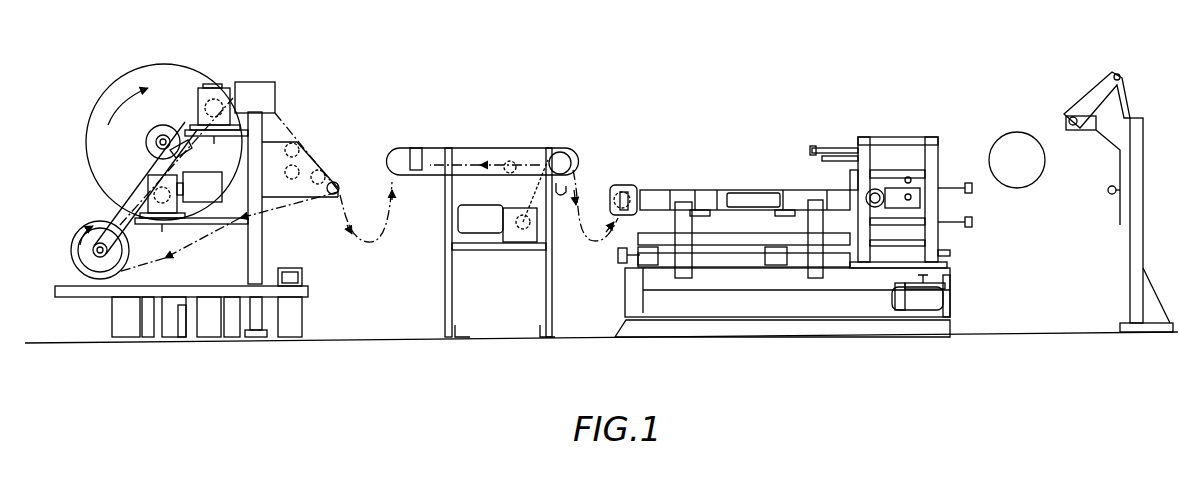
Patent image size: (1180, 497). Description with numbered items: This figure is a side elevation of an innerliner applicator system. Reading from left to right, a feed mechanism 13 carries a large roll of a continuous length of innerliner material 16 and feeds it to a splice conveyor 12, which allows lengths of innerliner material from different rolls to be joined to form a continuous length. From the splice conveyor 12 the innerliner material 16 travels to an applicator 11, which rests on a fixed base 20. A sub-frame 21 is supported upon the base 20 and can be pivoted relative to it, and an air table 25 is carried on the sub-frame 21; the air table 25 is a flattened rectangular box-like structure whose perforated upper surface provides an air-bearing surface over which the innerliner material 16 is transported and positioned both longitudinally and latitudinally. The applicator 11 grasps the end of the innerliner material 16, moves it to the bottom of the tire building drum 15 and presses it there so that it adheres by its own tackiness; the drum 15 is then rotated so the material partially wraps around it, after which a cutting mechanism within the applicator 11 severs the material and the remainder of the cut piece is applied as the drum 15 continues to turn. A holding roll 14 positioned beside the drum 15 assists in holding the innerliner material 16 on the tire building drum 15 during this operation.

The applicator 11 is at (878, 132).
The splice conveyor 12 is at (505, 145).
The feed mechanism 13 is at (285, 80).
The holding roll 14 is at (1142, 110).
The tire building drum 15 is at (1030, 173).
The innerliner material 16 is at (286, 128).
The base 20 is at (808, 320).
The sub-frame 21 is at (723, 278).
The air table 25 is at (715, 186).